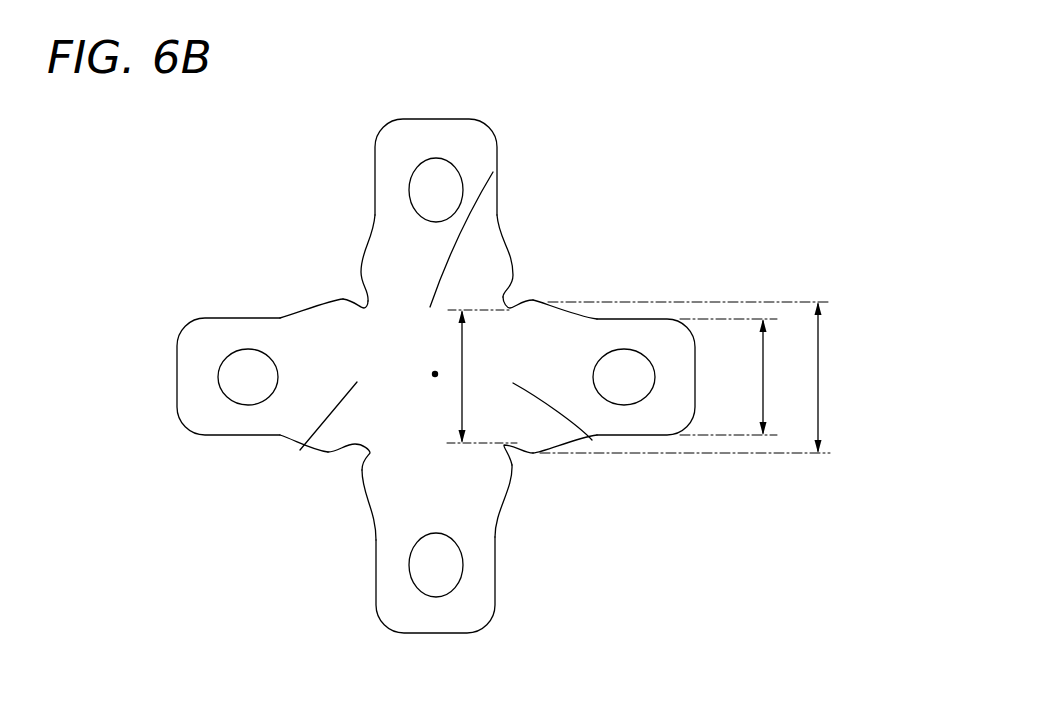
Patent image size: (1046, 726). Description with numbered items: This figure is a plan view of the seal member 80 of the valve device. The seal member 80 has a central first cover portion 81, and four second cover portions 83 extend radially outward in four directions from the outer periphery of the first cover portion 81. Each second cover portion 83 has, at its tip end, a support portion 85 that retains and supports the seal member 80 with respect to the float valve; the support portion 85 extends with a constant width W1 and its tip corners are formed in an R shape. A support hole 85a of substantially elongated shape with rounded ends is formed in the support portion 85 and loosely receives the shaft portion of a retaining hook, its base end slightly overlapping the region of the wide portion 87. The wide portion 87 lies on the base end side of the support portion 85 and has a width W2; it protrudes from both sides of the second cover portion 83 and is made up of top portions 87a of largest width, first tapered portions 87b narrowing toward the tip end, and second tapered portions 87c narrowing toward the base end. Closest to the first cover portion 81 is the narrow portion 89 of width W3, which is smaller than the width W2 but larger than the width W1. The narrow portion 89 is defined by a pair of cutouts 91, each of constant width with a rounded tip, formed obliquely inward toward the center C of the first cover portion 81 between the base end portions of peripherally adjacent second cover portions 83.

The seal member 80 is at (254, 300).
The first cover portion 81 is at (397, 375).
The second cover portion 83 is at (652, 320).
The support portion 85 is at (483, 135).
The support hole 85a is at (412, 179).
The wide portion 87 is at (373, 222).
The top portion 87a is at (545, 302).
The first tapered portion 87b is at (583, 302).
The second tapered portion 87c is at (535, 295).
The narrow portion 89 is at (493, 172).
The cutout 91 is at (358, 300).
The center of the first cover portion C is at (435, 373).
The width of the support portion W1 is at (764, 378).
The width of the wide portion W2 is at (820, 378).
The width of the narrow portion W3 is at (447, 413).